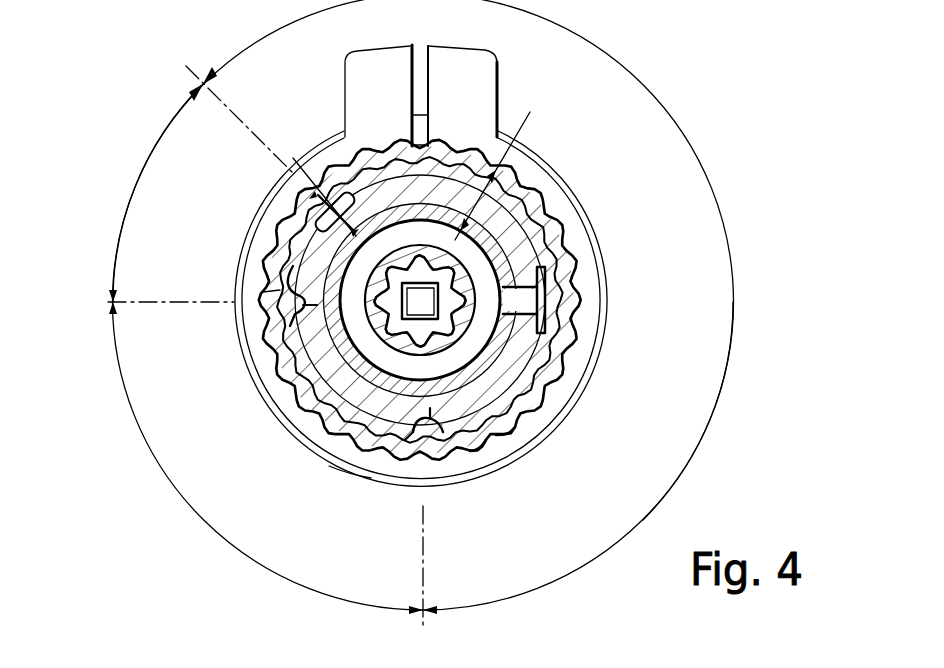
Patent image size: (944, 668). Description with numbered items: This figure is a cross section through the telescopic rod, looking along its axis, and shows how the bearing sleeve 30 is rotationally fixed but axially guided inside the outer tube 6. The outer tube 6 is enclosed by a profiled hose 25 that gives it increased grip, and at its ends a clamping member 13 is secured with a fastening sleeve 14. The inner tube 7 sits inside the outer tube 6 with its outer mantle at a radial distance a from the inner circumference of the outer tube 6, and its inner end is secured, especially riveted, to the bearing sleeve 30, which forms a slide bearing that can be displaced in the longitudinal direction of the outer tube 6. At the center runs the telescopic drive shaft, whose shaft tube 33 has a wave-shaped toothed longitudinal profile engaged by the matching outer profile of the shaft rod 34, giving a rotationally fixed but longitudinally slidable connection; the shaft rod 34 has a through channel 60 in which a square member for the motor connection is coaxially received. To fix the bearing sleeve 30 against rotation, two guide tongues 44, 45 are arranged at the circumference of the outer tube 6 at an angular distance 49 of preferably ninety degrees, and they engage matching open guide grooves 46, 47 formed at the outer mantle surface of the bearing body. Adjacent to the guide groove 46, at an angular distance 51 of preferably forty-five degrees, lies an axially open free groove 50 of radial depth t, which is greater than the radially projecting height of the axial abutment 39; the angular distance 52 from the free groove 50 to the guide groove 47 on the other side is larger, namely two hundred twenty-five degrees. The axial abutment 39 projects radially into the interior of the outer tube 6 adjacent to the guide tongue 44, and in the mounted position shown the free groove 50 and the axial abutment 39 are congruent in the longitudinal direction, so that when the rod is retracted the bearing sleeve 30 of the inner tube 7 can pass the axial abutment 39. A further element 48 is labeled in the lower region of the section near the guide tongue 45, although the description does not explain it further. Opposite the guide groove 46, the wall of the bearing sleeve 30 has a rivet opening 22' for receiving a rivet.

The angular distance 49 is at (203, 525).
The angular distance 51 is at (130, 195).
The angular distance 52 is at (715, 398).
The clamping member 13 is at (590, 215).
The outer tube 6 is at (312, 450).
The profiled hose 25 is at (348, 470).
The bearing sleeve 30 is at (493, 215).
The fastening sleeve 14 is at (582, 249).
The shaft tube 33 is at (463, 323).
The shaft rod 34 is at (433, 313).
The corrugation 48 is at (493, 434).
The inner tube 7 is at (340, 340).
The rivet opening 22' is at (600, 300).
The radial distance a is at (530, 112).
The through channel 60 is at (470, 331).
The guide groove 46 is at (290, 318).
The guide tongue 44 is at (263, 292).
The guide groove 47 is at (443, 432).
The guide tongue 45 is at (403, 442).
The axial abutment 39 is at (338, 216).
The free groove 50 is at (322, 234).
The radial depth t is at (293, 158).